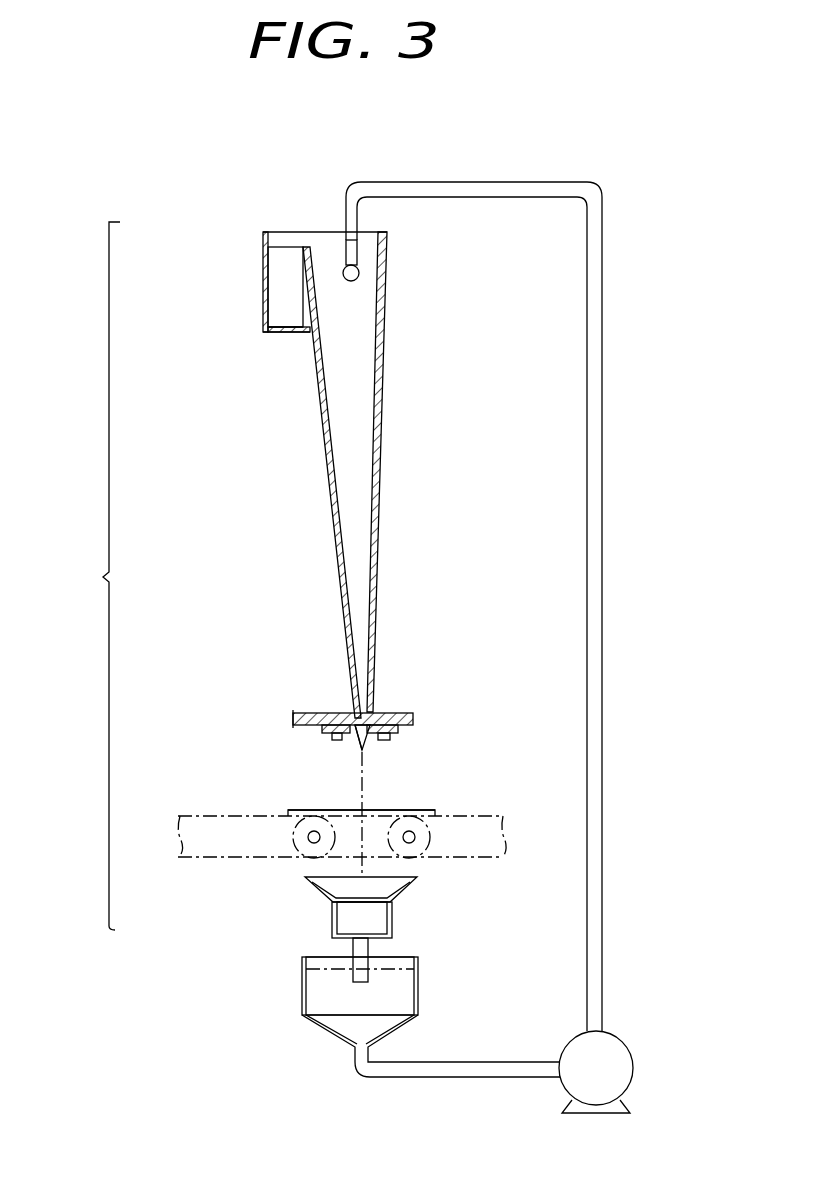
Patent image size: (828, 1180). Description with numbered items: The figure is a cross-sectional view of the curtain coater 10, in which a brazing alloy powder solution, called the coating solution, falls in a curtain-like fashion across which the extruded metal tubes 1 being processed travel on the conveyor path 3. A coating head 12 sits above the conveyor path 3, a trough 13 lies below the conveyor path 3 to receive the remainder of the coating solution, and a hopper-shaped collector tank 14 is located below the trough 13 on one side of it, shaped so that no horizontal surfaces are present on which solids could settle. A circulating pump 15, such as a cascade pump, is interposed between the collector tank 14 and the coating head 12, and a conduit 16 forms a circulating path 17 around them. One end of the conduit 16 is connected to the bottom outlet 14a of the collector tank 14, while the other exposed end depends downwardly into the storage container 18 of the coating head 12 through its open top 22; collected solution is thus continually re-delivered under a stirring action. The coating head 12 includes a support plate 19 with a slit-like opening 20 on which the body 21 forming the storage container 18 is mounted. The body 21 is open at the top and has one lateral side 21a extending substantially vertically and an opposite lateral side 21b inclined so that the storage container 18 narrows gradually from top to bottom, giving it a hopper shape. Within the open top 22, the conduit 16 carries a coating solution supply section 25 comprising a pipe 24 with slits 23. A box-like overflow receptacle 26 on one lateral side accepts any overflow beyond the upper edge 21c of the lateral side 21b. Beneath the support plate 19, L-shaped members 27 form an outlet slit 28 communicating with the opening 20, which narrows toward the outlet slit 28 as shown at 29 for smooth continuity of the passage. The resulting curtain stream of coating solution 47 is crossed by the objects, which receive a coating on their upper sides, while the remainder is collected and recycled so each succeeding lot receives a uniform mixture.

The extruded metal tubes 1 is at (420, 810).
The conveyor path 3 is at (200, 815).
The curtain coater 10 is at (85, 576).
The coating head 12 is at (327, 469).
The trough 13 is at (332, 913).
The collector tank 14 is at (302, 987).
The bottom outlet 14a is at (322, 1028).
The circulating pump 15 is at (622, 1040).
The conduit 16 is at (400, 187).
The circulating path 17 is at (604, 557).
The storage container 18 is at (388, 388).
The support plate 19 is at (402, 713).
The opening 20 is at (367, 712).
The body 21 is at (329, 469).
The lateral side 21a is at (377, 503).
The opposite lateral side 21b is at (327, 484).
The upper edge 21c is at (300, 246).
The open top 22 is at (335, 255).
The slits 23 is at (359, 280).
The pipe 24 is at (358, 268).
The coating solution supply section 25 is at (395, 250).
The overflow receptacle 26 is at (267, 332).
The L-shaped members 27 is at (352, 745).
The outlet slit 28 is at (419, 811).
The narrowing portion of the opening 29 is at (352, 702).
The curtain stream of coating solution 47 is at (360, 790).